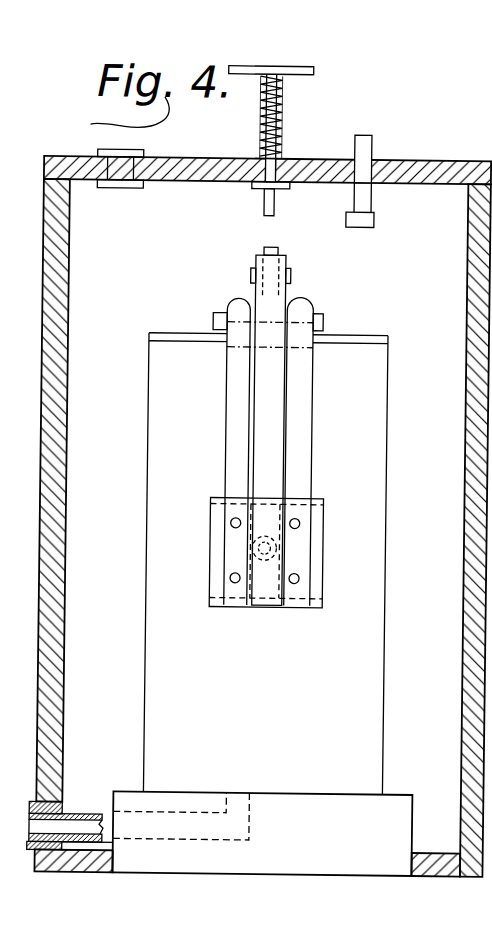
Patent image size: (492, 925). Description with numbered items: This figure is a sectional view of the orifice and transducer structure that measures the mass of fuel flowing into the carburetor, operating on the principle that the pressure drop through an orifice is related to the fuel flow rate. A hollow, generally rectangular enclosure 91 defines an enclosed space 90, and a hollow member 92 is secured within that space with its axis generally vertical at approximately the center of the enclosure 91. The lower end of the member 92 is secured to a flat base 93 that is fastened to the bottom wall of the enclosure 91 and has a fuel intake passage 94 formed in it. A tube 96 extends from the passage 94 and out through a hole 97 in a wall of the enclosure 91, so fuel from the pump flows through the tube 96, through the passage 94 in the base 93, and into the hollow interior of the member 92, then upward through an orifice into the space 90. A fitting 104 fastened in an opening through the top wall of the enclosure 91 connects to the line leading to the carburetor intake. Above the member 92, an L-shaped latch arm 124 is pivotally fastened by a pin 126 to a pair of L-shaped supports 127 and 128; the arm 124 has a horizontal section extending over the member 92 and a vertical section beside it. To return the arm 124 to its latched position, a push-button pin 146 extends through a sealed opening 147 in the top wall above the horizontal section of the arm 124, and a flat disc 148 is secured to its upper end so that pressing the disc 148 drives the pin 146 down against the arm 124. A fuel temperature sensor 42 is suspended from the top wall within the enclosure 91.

The enclosure 91 is at (406, 168).
The enclosed space 90 is at (158, 262).
The fitting 104 is at (93, 152).
The flat disc 148 is at (309, 71).
The pin 146 is at (277, 140).
The sealed opening 147 is at (261, 158).
The fuel temperature sensor 42 is at (369, 220).
The hollow member 92 is at (320, 692).
The latch arm 124 is at (286, 302).
The pin 126 is at (321, 320).
The L-shaped support 127 is at (236, 402).
The L-shaped support 128 is at (302, 425).
The flat base 93 is at (358, 842).
The fuel intake passage 94 is at (206, 840).
The tube 96 is at (78, 814).
The hole 97 is at (31, 832).